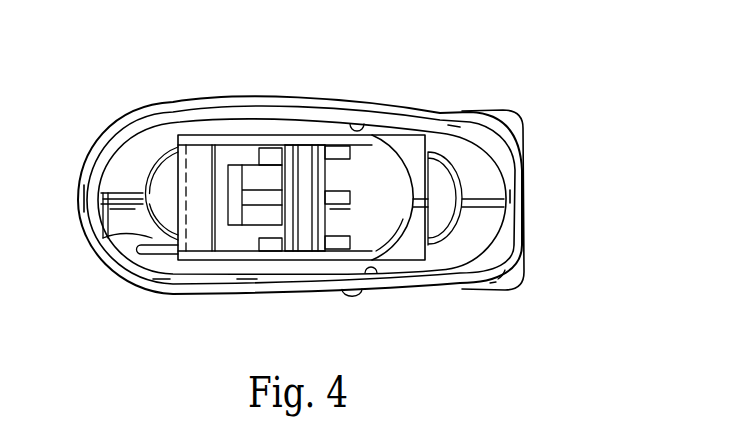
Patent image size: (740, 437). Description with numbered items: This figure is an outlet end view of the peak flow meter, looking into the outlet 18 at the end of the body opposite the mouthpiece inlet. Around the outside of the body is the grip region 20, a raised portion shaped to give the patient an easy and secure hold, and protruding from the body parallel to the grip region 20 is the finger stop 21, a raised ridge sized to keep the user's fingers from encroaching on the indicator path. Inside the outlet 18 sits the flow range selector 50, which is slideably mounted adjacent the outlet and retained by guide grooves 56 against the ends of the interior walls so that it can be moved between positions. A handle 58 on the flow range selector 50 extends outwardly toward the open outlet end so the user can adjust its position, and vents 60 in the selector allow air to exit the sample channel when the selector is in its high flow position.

The outlet 18 is at (124, 236).
The grip region 20 is at (525, 266).
The finger stop 21 is at (348, 293).
The flow range selector 50 is at (378, 181).
The guide grooves 56 is at (362, 124).
The handle 58 is at (291, 150).
The vents 60 is at (248, 190).